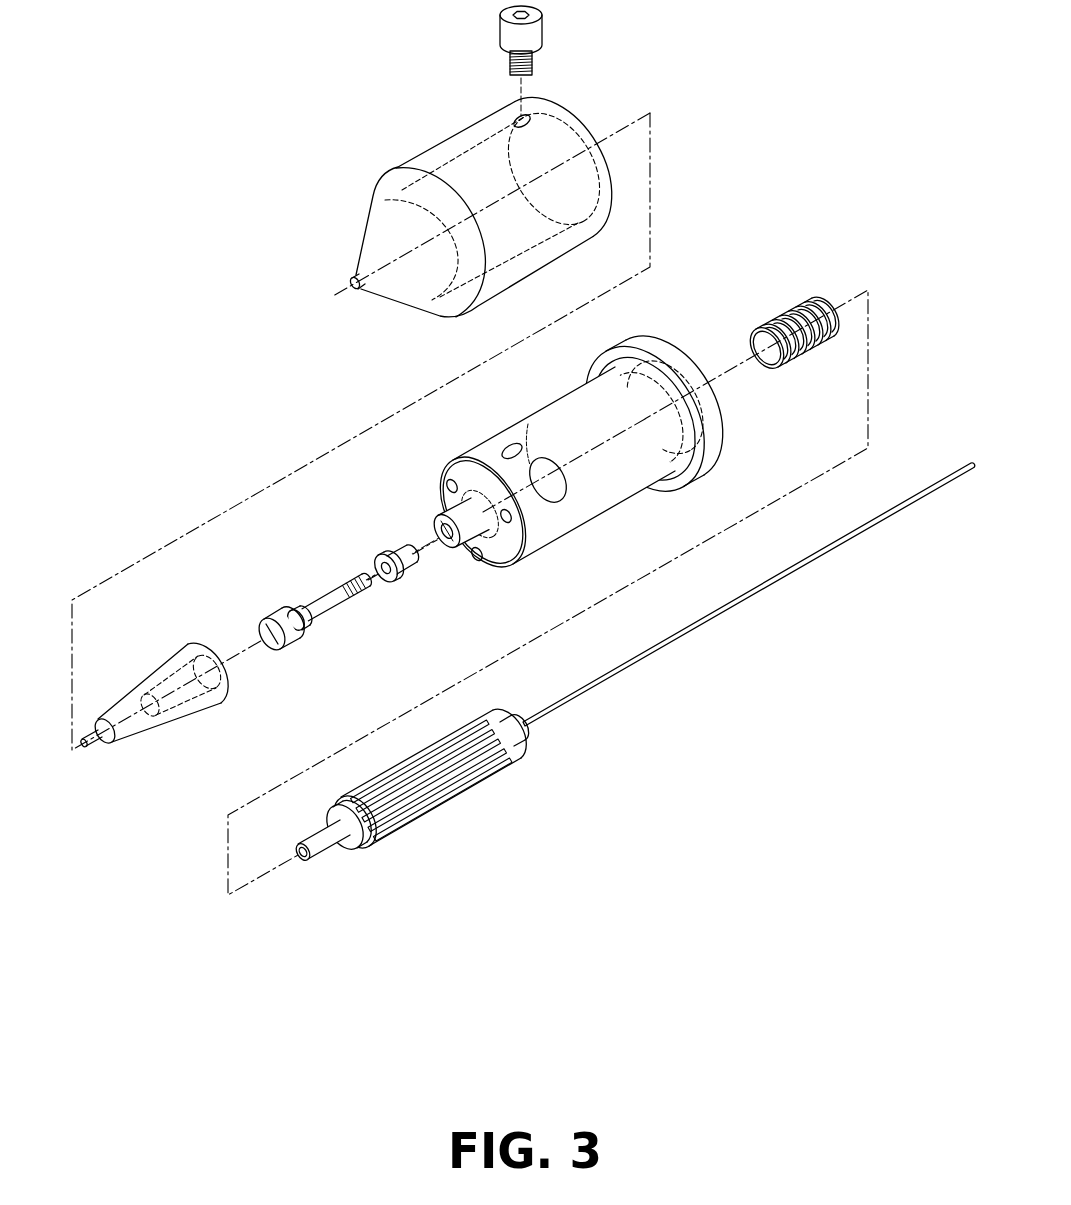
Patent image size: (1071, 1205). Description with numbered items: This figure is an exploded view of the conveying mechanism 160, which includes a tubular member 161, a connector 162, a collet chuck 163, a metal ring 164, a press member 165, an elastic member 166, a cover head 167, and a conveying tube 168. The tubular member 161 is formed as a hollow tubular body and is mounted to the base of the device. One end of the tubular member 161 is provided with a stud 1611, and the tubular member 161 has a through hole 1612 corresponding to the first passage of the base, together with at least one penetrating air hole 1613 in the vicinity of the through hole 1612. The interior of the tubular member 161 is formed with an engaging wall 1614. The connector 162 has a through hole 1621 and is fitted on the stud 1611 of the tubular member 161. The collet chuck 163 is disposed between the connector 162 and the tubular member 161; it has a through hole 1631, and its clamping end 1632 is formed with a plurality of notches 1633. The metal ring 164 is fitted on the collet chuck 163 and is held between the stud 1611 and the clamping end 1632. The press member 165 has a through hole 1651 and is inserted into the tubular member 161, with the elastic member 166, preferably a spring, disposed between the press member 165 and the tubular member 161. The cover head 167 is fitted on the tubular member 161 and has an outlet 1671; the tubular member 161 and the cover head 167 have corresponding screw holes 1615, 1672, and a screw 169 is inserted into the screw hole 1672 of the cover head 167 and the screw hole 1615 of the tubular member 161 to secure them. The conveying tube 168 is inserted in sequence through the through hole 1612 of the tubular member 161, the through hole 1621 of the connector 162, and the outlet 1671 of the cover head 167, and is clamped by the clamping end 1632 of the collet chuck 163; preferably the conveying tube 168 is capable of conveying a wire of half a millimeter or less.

The conveying mechanism 160 is at (250, 287).
The tubular member 161 is at (596, 488).
The stud 1611 is at (490, 568).
The through hole 1612 is at (440, 512).
The penetrating air hole 1613 is at (482, 575).
The engaging wall 1614 is at (532, 422).
The screw hole 1615 is at (503, 449).
The connector 162 is at (145, 677).
The through hole 1621 is at (88, 748).
The collet chuck 163 is at (318, 603).
The through hole 1631 is at (262, 622).
The clamping end 1632 is at (278, 614).
The notches 1633 is at (290, 650).
The metal ring 164 is at (393, 585).
The press member 165 is at (447, 777).
The through hole 1651 is at (307, 854).
The elastic member 166 is at (788, 300).
The cover head 167 is at (453, 150).
The outlet 1671 is at (358, 290).
The screw hole 1672 is at (531, 116).
The conveying tube 168 is at (670, 640).
The screw 169 is at (541, 30).